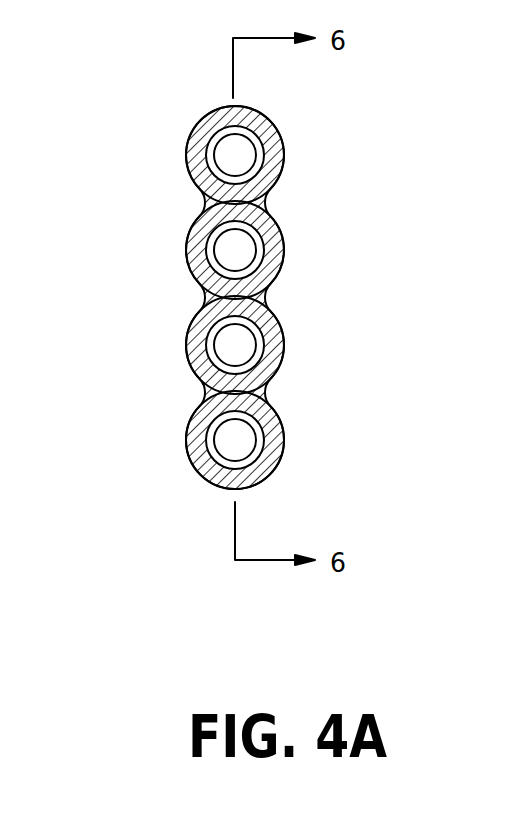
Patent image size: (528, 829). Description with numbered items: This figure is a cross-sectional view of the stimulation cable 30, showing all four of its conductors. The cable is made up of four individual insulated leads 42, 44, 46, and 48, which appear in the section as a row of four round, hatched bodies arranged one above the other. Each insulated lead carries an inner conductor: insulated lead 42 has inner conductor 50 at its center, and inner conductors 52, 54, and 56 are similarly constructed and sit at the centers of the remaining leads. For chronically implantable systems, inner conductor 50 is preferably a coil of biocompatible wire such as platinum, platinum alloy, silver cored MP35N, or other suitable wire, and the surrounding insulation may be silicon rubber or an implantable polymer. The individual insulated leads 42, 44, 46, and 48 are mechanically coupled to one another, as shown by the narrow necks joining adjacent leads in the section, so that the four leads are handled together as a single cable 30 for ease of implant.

The cable 30 is at (350, 290).
The insulated lead 42 is at (278, 155).
The insulated lead 44 is at (278, 250).
The insulated lead 46 is at (278, 345).
The insulated lead 48 is at (278, 440).
The inner conductor 50 is at (174, 135).
The inner conductor 52 is at (174, 231).
The inner conductor 54 is at (174, 327).
The inner conductor 56 is at (174, 422).